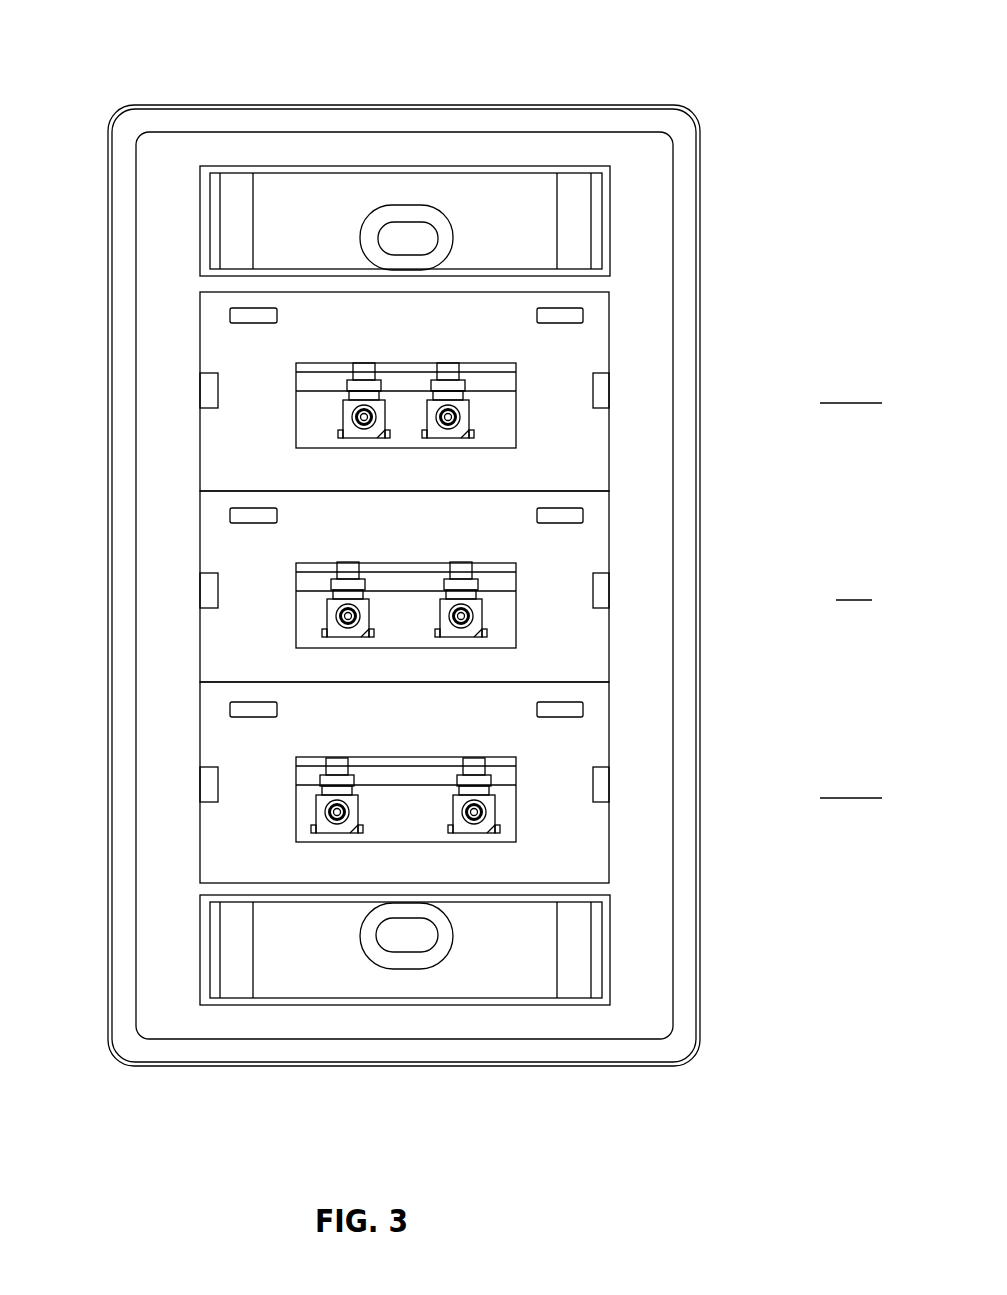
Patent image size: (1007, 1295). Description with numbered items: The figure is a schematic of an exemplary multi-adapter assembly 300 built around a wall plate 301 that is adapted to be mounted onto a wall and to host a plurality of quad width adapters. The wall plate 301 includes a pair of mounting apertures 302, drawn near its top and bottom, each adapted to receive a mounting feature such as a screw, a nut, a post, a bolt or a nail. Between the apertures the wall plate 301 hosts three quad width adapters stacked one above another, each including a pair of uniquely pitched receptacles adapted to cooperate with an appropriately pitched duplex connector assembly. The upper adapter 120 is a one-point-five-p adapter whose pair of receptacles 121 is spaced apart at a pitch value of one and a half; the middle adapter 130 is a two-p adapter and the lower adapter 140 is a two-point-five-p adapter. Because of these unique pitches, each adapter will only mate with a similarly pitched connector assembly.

The multi-adapter assembly 300 is at (146, 75).
The wall plate 301 is at (123, 462).
The mounting apertures 302 is at (409, 237).
The adapter 120 is at (406, 391).
The receptacles 121 is at (343, 418).
The adapter 130 is at (295, 578).
The adapter 140 is at (295, 780).